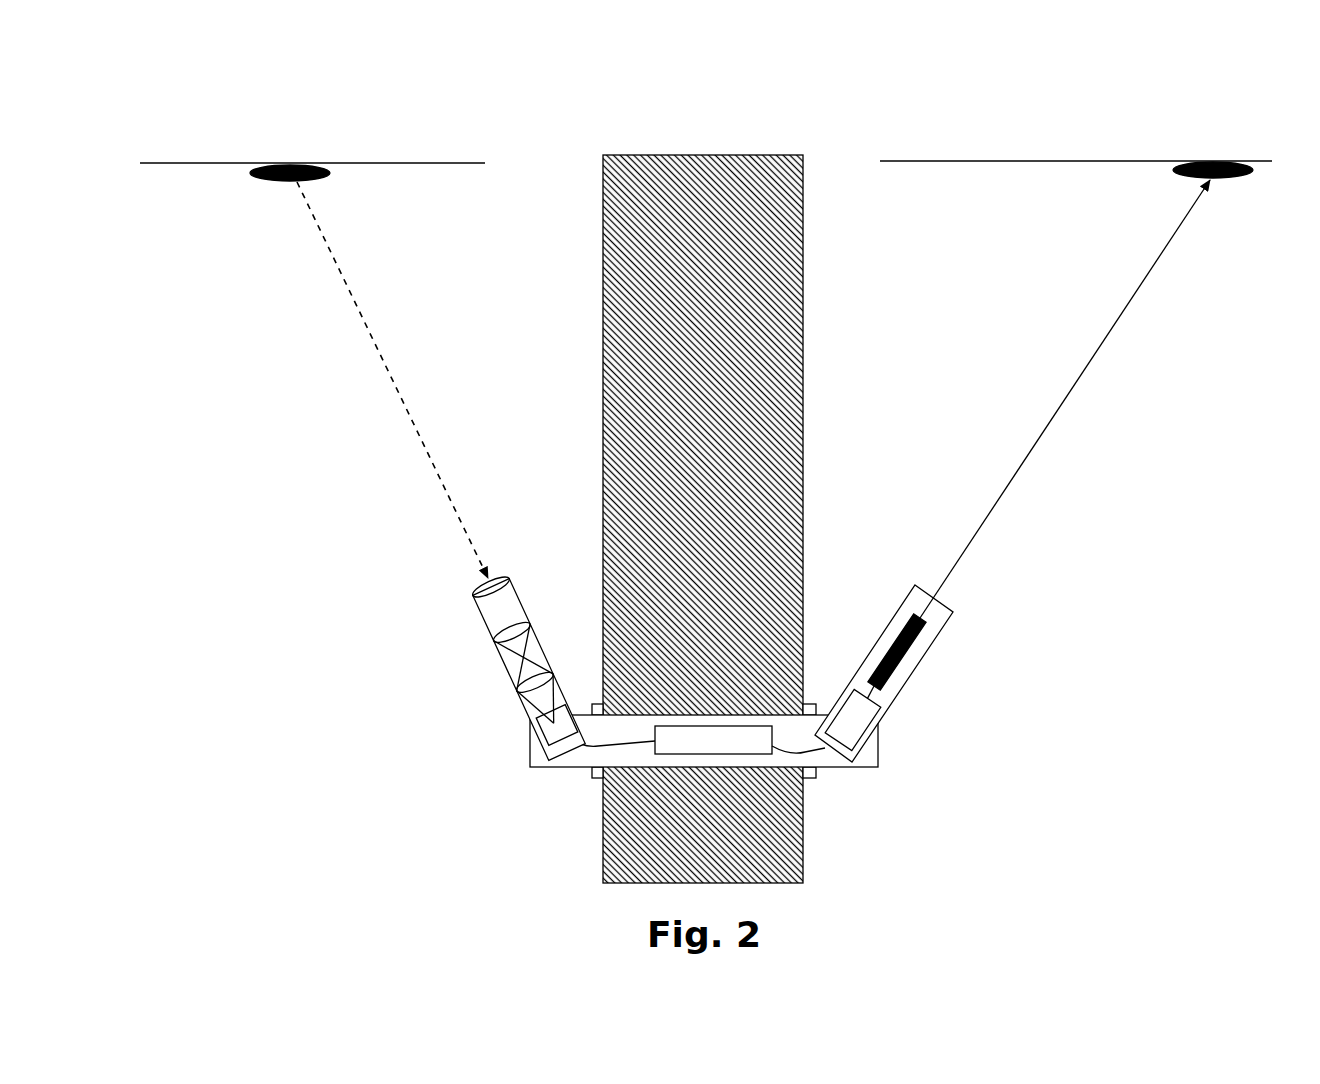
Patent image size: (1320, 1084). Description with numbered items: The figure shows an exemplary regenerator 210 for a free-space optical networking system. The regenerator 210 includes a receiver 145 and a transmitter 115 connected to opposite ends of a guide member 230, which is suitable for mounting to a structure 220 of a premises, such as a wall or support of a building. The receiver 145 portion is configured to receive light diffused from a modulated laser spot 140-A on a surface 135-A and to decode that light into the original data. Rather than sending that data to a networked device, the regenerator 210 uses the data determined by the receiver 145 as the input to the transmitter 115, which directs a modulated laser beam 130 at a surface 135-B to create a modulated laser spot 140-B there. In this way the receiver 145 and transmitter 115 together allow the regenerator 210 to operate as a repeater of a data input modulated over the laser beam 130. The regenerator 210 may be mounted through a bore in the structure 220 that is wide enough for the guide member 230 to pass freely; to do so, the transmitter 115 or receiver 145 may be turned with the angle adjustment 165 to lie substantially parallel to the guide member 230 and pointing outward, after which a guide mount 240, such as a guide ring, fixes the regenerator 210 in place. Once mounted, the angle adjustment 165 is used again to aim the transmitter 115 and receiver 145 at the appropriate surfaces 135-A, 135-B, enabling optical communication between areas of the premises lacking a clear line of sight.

The surface 135-A is at (217, 163).
The surface 135-B is at (1048, 160).
The modulated laser spot 140-A is at (262, 220).
The modulated laser spot 140-B is at (1158, 206).
The structure 220 is at (682, 155).
The guide mount 240 is at (593, 697).
The guide member 230 is at (770, 702).
The regenerator 210 is at (637, 783).
The receiver 145 is at (479, 676).
The transmitter 115 is at (936, 685).
The modulated laser beam 130 is at (1032, 463).
The angle adjustment 165 is at (498, 768).